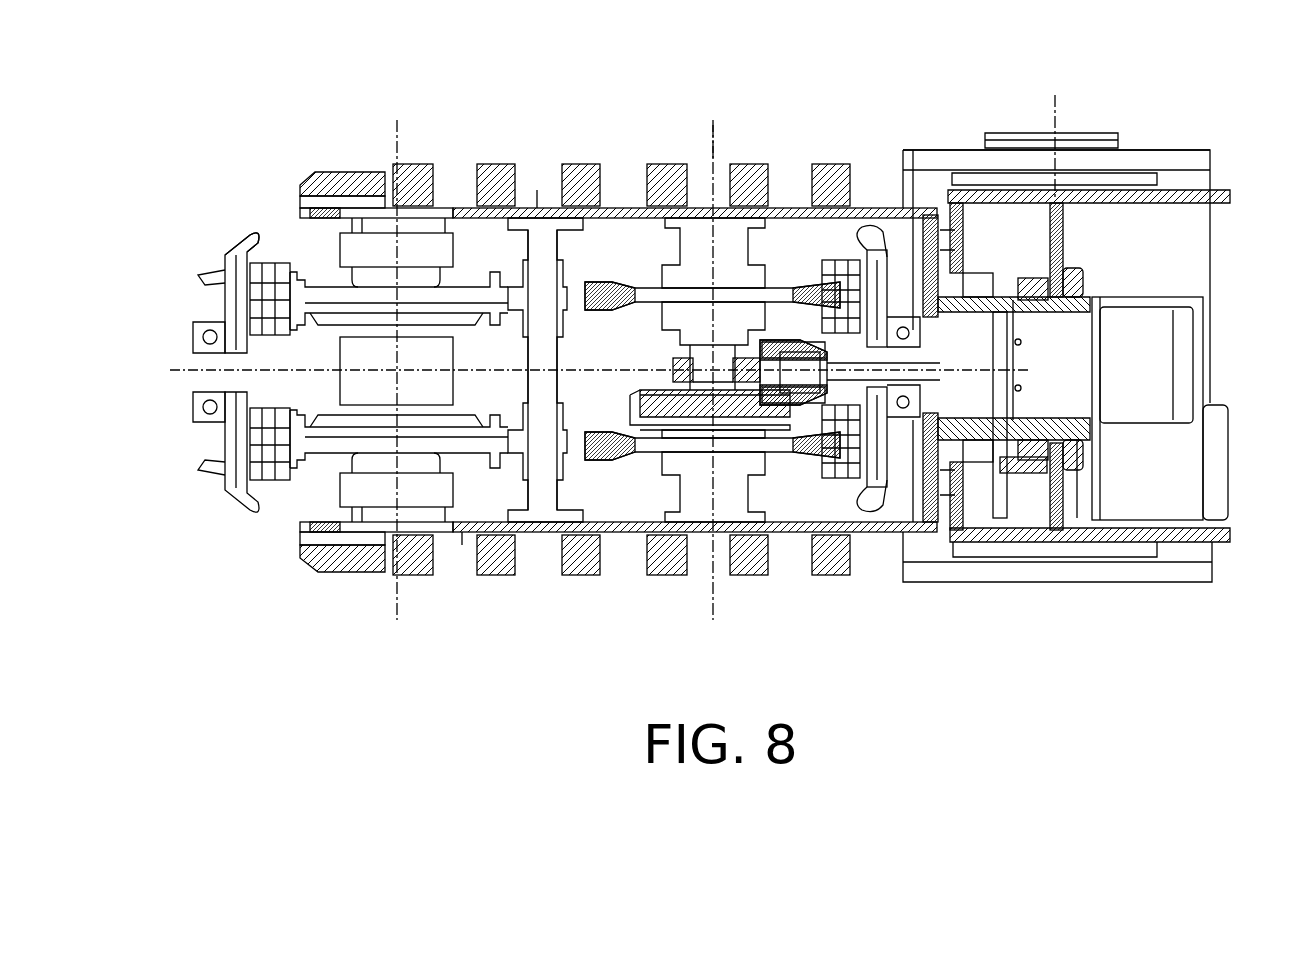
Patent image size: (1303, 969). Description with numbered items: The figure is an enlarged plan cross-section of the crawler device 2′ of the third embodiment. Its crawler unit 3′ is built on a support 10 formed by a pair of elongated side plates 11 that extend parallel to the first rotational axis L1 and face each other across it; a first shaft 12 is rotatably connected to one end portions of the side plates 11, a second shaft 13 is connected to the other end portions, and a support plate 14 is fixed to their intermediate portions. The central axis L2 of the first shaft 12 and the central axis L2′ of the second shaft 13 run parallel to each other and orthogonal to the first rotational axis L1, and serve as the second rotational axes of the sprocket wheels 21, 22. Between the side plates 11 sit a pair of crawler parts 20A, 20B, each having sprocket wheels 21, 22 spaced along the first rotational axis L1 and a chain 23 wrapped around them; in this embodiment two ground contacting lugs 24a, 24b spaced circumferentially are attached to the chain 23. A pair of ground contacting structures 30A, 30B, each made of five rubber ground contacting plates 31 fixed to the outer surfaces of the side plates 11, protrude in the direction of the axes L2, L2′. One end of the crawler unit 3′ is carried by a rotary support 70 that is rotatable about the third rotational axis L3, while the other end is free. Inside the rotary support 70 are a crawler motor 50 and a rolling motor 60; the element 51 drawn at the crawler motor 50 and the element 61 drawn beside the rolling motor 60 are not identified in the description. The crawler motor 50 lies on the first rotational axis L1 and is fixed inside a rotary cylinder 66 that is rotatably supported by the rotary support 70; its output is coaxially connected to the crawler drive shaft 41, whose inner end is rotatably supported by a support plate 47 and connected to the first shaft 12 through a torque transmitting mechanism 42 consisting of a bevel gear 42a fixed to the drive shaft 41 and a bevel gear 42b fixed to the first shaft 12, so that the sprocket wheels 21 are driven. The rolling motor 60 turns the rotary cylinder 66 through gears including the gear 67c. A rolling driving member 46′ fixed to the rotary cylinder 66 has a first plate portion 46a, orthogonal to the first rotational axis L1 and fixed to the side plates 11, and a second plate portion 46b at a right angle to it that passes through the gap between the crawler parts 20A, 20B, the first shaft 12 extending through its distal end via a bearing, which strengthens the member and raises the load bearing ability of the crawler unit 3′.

The crawler device 2′ is at (1136, 90).
The crawler unit 3′ is at (729, 144).
The support 10 is at (625, 206).
The side plates 11 is at (536, 190).
The first shaft 12 is at (700, 523).
The second shaft 13 is at (374, 500).
The support plate 14 is at (540, 357).
The crawler part 20A is at (227, 237).
The crawler part 20B is at (230, 513).
The sprocket wheel 21 is at (612, 288).
The sprocket wheel 22 is at (329, 286).
The chain 23 is at (269, 262).
The ground contacting lug 24a is at (204, 338).
The ground contacting lug 24b is at (222, 268).
The ground contacting structure 30A is at (497, 162).
The ground contacting structure 30B is at (498, 578).
The ground contacting plates 31 is at (582, 164).
The crawler drive shaft 41 is at (909, 318).
The torque transmitting mechanism 42 is at (737, 420).
The bevel gear 42a is at (812, 347).
The bevel gear 42b is at (766, 412).
The rolling driving member 46′ is at (930, 440).
The first plate portion 46a is at (935, 262).
The second plate portion 46b is at (679, 359).
The support plate 47 is at (770, 340).
The crawler motor 50 is at (1142, 330).
The motor shaft 51 is at (1182, 350).
The rolling motor 60 is at (1182, 490).
The cover 61 is at (1218, 442).
The rotary cylinder 66 is at (1073, 290).
The gear 67c is at (1031, 278).
The rotary support 70 is at (1170, 150).
The first rotational axis L1 is at (1028, 368).
The central axis L2 is at (713, 155).
The central axis L2′ is at (397, 150).
The third rotational axis L3 is at (1056, 110).